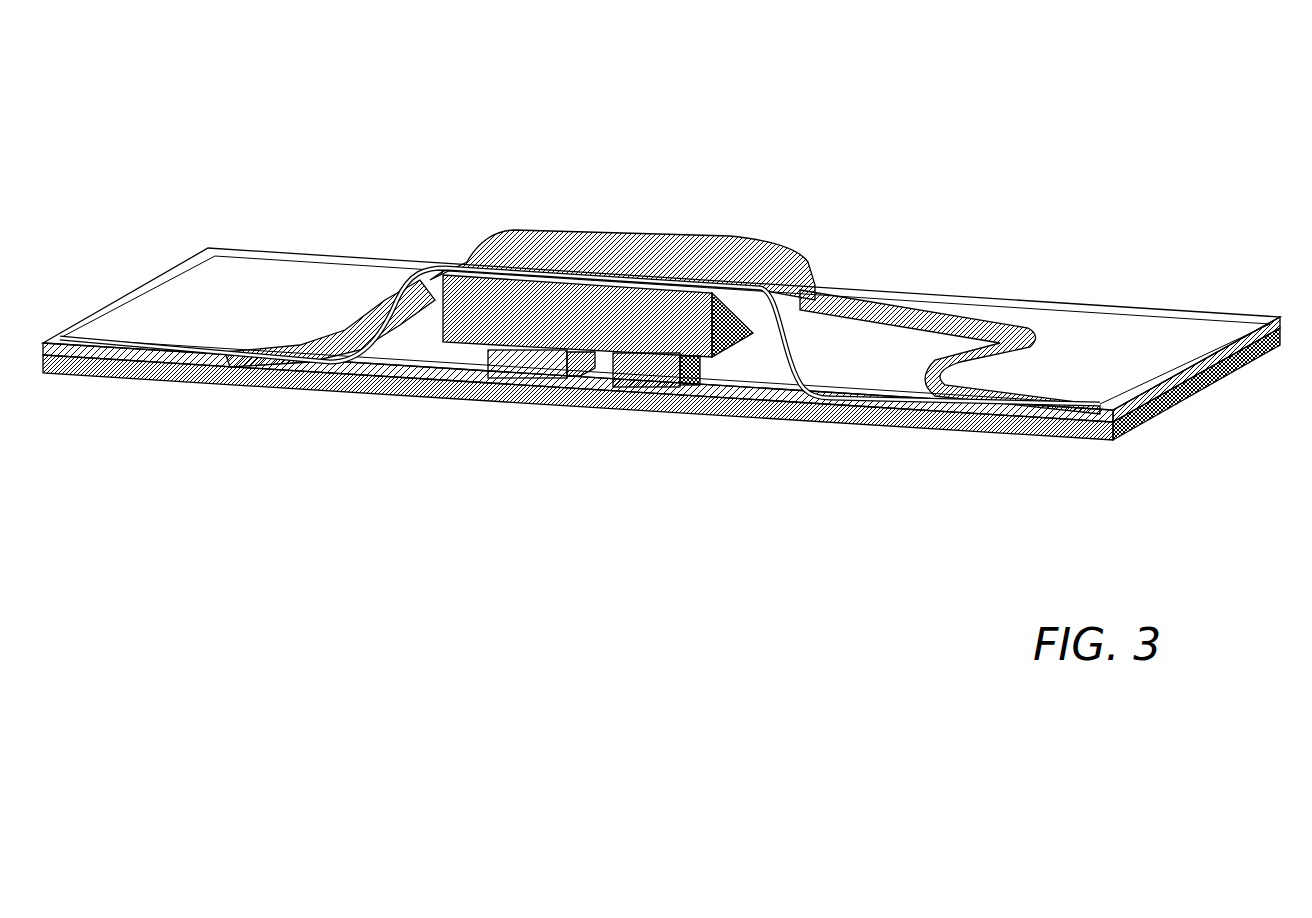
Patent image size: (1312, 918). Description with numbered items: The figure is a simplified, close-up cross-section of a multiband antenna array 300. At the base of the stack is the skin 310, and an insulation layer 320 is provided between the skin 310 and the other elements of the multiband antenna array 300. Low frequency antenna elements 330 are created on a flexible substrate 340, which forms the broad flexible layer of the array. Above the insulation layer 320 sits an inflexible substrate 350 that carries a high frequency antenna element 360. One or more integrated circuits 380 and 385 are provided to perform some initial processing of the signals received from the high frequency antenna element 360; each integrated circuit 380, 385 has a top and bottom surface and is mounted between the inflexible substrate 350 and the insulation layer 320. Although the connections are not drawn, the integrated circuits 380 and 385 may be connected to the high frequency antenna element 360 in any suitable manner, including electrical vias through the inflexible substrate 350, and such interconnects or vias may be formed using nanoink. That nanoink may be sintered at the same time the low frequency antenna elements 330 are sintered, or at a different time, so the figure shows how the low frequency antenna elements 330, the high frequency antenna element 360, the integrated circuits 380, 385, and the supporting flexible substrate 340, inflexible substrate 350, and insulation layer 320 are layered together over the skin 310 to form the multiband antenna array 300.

The multiband antenna array 300 is at (946, 92).
The skin 310 is at (858, 435).
The insulation layer 320 is at (410, 371).
The low frequency antenna elements 330 is at (1017, 319).
The flexible substrate 340 is at (187, 327).
The inflexible substrate 350 is at (678, 297).
The high frequency antenna element 360 is at (554, 247).
The integrated circuit 380 is at (525, 385).
The integrated circuit 385 is at (648, 382).